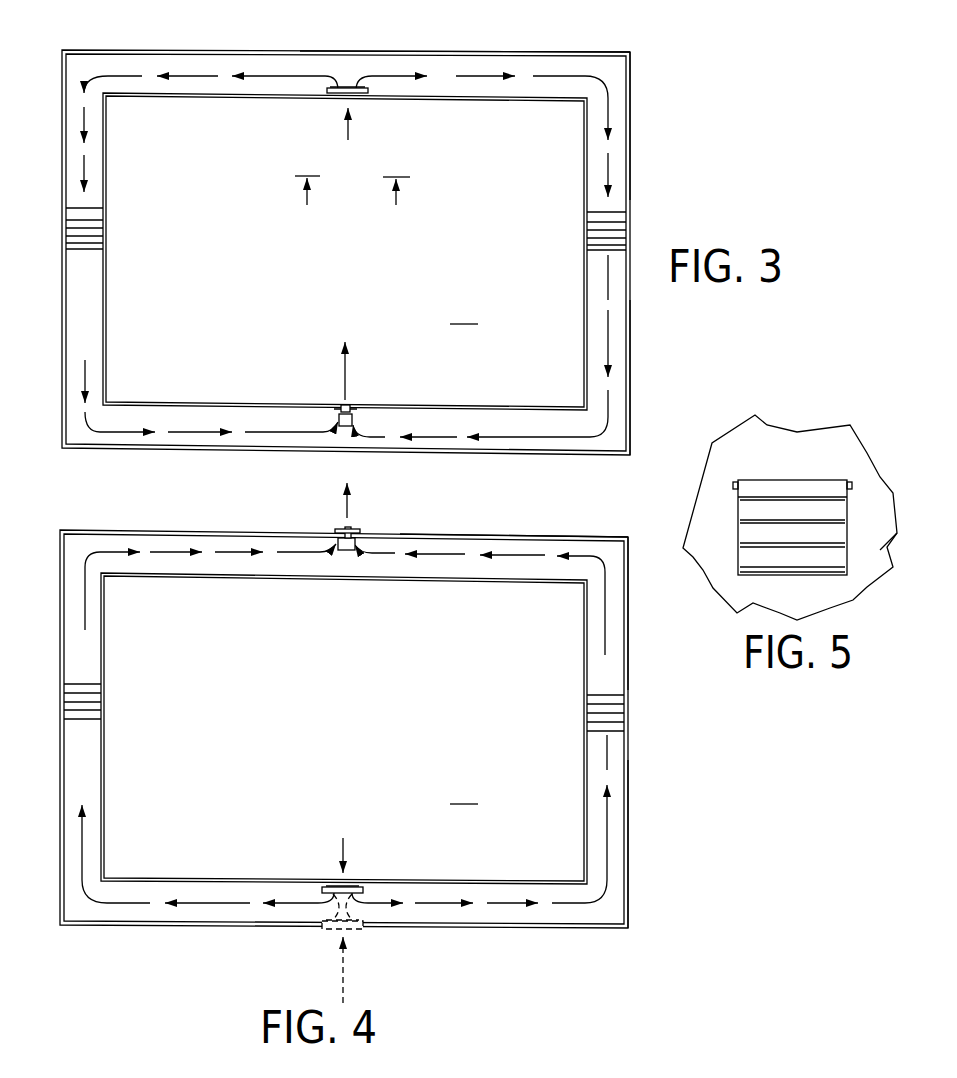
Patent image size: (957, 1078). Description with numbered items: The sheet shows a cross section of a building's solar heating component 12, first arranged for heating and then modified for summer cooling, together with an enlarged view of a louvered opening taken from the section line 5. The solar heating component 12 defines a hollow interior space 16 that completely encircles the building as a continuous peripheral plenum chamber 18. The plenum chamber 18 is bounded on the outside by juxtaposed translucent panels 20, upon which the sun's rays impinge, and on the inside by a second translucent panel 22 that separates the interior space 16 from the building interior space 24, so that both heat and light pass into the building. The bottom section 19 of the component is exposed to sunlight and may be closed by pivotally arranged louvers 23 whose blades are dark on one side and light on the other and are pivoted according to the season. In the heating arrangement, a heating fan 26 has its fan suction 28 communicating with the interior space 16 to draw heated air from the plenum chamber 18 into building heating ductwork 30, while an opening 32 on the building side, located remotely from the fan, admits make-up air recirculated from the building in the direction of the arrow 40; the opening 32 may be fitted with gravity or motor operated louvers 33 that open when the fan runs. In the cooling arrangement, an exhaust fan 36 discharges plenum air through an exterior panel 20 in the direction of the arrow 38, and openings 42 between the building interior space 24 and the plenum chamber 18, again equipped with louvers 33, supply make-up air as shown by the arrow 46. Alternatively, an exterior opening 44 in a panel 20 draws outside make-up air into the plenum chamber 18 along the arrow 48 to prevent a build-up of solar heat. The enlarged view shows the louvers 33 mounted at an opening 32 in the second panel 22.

In FIG. 3, the section line 5 is at (352, 207).
In FIG. 3, the solar heating component 12 is at (514, 447).
In FIG. 4, the solar heating component 12 is at (514, 920).
In FIG. 3, the interior space 16 is at (620, 392).
In FIG. 4, the interior space 16 is at (627, 833).
In FIG. 3, the plenum chamber 18 is at (555, 73).
In FIG. 4, the plenum chamber 18 is at (562, 546).
In FIG. 3, the bottom section 19 is at (617, 270).
In FIG. 4, the bottom section 19 is at (613, 728).
In FIG. 3, the translucent panels 20 is at (632, 140).
In FIG. 4, the translucent panels 20 is at (628, 645).
In FIG. 3, the second translucent panel 22 is at (586, 298).
In FIG. 4, the second translucent panel 22 is at (585, 667).
In FIG. 5, the second translucent panel 22 is at (880, 559).
In FIG. 3, the louvers 23 is at (617, 220).
In FIG. 4, the louvers 23 is at (610, 698).
In FIG. 3, the building interior space 24 is at (464, 312).
In FIG. 4, the building interior space 24 is at (464, 792).
In FIG. 3, the heating fans 26 is at (352, 407).
In FIG. 3, the fan suction 28 is at (340, 427).
In FIG. 3, the building heating ductwork 30 is at (343, 370).
In FIG. 3, the openings 32 is at (354, 95).
In FIG. 5, the openings 32 is at (846, 543).
In FIG. 3, the louvers 33 is at (348, 88).
In FIG. 4, the louvers 33 is at (334, 884).
In FIG. 5, the louvers 33 is at (817, 490).
In FIG. 4, the exhaust fan 36 is at (356, 540).
In FIG. 4, the arrow 38 is at (351, 505).
In FIG. 3, the arrow 40 is at (346, 132).
In FIG. 4, the openings 42 is at (347, 884).
In FIG. 4, the exterior opening 44 is at (363, 940).
In FIG. 4, the arrow 46 is at (343, 843).
In FIG. 4, the arrow 48 is at (343, 982).